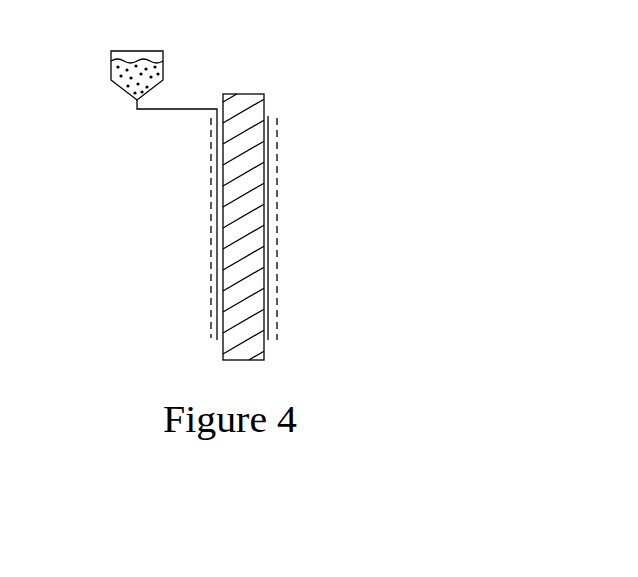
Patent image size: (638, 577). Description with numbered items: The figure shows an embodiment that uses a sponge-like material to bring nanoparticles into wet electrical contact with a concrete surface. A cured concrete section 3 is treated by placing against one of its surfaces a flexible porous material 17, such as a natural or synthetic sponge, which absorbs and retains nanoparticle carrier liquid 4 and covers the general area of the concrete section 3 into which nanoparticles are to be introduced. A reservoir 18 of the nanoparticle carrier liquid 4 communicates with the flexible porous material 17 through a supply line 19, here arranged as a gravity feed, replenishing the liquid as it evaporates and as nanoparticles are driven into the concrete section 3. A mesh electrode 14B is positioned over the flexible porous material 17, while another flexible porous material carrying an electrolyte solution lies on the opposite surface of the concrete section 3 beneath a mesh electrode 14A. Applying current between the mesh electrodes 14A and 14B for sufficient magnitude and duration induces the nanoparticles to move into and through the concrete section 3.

The concrete section 3 is at (248, 360).
The nanoparticle carrier liquid 4 is at (112, 80).
The mesh electrode 14A is at (279, 137).
The mesh electrode 14B is at (210, 321).
The flexible porous material 17 is at (217, 342).
The reservoir 18 is at (163, 68).
The supply line 19 is at (157, 112).